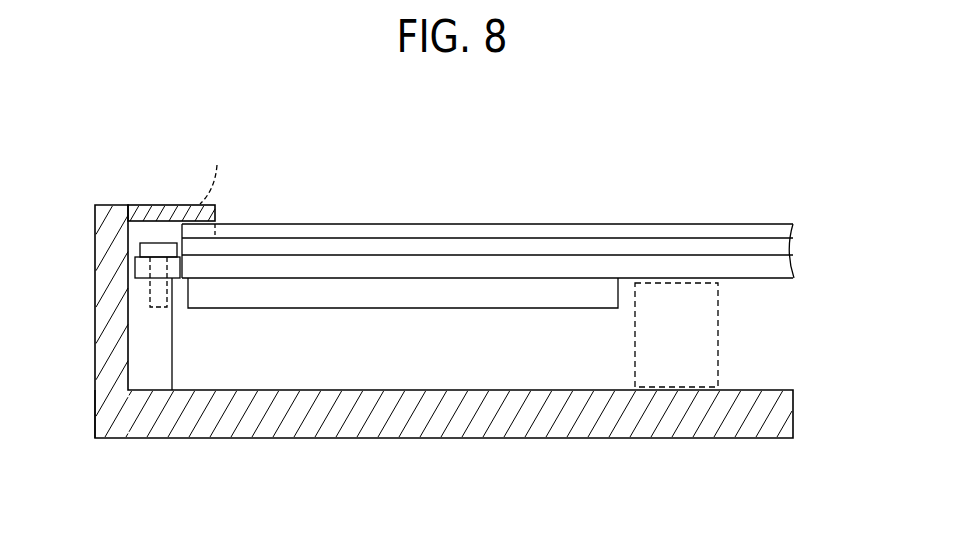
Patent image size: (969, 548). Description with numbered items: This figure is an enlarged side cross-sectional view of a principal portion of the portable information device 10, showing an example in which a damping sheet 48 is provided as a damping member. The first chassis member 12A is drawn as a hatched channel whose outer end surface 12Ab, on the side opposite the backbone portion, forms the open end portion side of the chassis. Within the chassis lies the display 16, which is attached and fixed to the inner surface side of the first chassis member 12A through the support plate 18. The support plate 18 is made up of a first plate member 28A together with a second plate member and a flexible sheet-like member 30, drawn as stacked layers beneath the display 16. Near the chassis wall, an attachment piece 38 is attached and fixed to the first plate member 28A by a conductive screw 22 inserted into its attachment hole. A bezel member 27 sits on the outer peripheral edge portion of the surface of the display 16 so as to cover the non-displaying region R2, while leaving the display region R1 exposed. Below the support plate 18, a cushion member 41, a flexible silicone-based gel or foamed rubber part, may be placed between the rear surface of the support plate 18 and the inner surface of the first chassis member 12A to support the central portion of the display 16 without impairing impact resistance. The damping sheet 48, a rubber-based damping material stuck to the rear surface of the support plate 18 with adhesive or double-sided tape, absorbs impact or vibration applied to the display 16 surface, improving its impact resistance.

The portable information device 10 is at (85, 117).
The first chassis member 12A is at (527, 441).
The outer end surface 12Ab is at (97, 393).
The display 16 is at (459, 222).
The support plate 18 is at (759, 281).
The conductive screw 22 is at (160, 205).
The bezel member 27 is at (137, 205).
The first plate member 28A is at (717, 265).
The sheet-like member 30 is at (584, 246).
The attachment piece 38 is at (140, 265).
The cushion member 41 is at (718, 370).
The damping sheet 48 is at (330, 293).
The display region R1 is at (292, 228).
The non-displaying region R2 is at (213, 189).